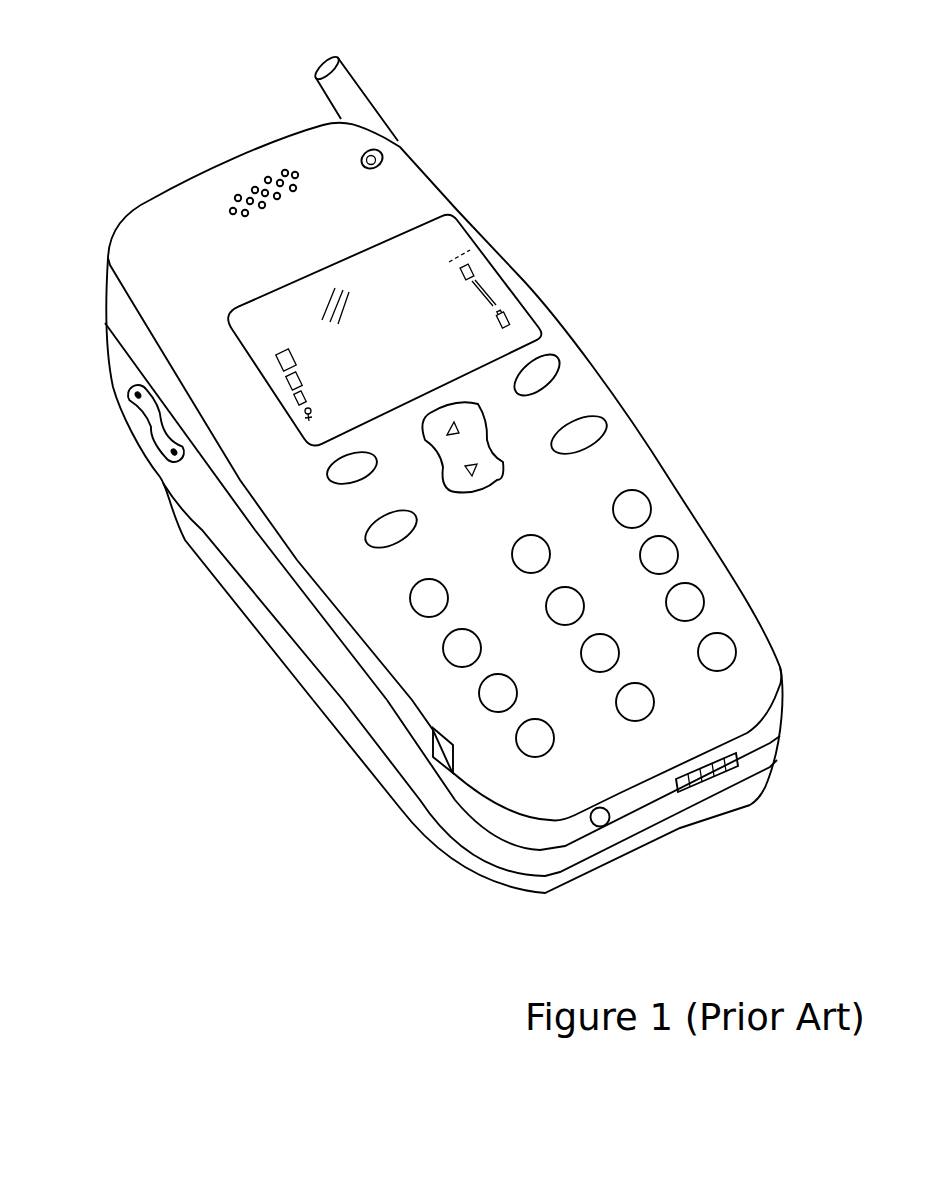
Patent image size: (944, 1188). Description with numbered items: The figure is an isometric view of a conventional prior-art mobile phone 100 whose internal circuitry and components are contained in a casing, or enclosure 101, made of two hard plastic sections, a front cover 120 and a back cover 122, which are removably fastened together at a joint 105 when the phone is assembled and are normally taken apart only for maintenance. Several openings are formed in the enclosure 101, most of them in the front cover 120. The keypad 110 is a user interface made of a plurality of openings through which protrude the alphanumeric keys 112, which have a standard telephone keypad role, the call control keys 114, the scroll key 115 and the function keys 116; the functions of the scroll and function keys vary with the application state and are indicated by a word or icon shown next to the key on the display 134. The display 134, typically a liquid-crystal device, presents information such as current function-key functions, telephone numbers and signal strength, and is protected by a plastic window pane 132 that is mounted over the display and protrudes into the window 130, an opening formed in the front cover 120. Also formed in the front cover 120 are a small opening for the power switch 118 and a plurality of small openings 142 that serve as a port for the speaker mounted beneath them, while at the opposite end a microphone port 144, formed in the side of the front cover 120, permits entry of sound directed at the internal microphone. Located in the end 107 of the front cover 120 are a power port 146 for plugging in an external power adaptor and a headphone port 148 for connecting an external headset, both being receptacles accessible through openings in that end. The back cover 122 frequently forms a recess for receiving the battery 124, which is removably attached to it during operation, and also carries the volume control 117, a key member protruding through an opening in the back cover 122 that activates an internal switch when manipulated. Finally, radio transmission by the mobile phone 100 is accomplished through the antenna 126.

The mobile phone 100 is at (735, 290).
The enclosure 101 is at (77, 290).
The joint 105 is at (130, 357).
The end 107 is at (770, 741).
The keypad 110 is at (625, 456).
The alphanumeric keys 112 is at (697, 562).
The call control keys 114 is at (605, 420).
The scroll key 115 is at (507, 423).
The function keys 116 is at (557, 350).
The volume control 117 is at (140, 417).
The power switch 118 is at (385, 161).
The front cover 120 is at (780, 667).
The back cover 122 is at (770, 767).
The battery 124 is at (753, 807).
The antenna 126 is at (353, 72).
The window 130 is at (457, 216).
The window pane 132 is at (466, 231).
The display 134 is at (475, 246).
The openings 142 is at (252, 176).
The microphone port 144 is at (441, 766).
The power port 146 is at (592, 824).
The headphone port 148 is at (675, 790).